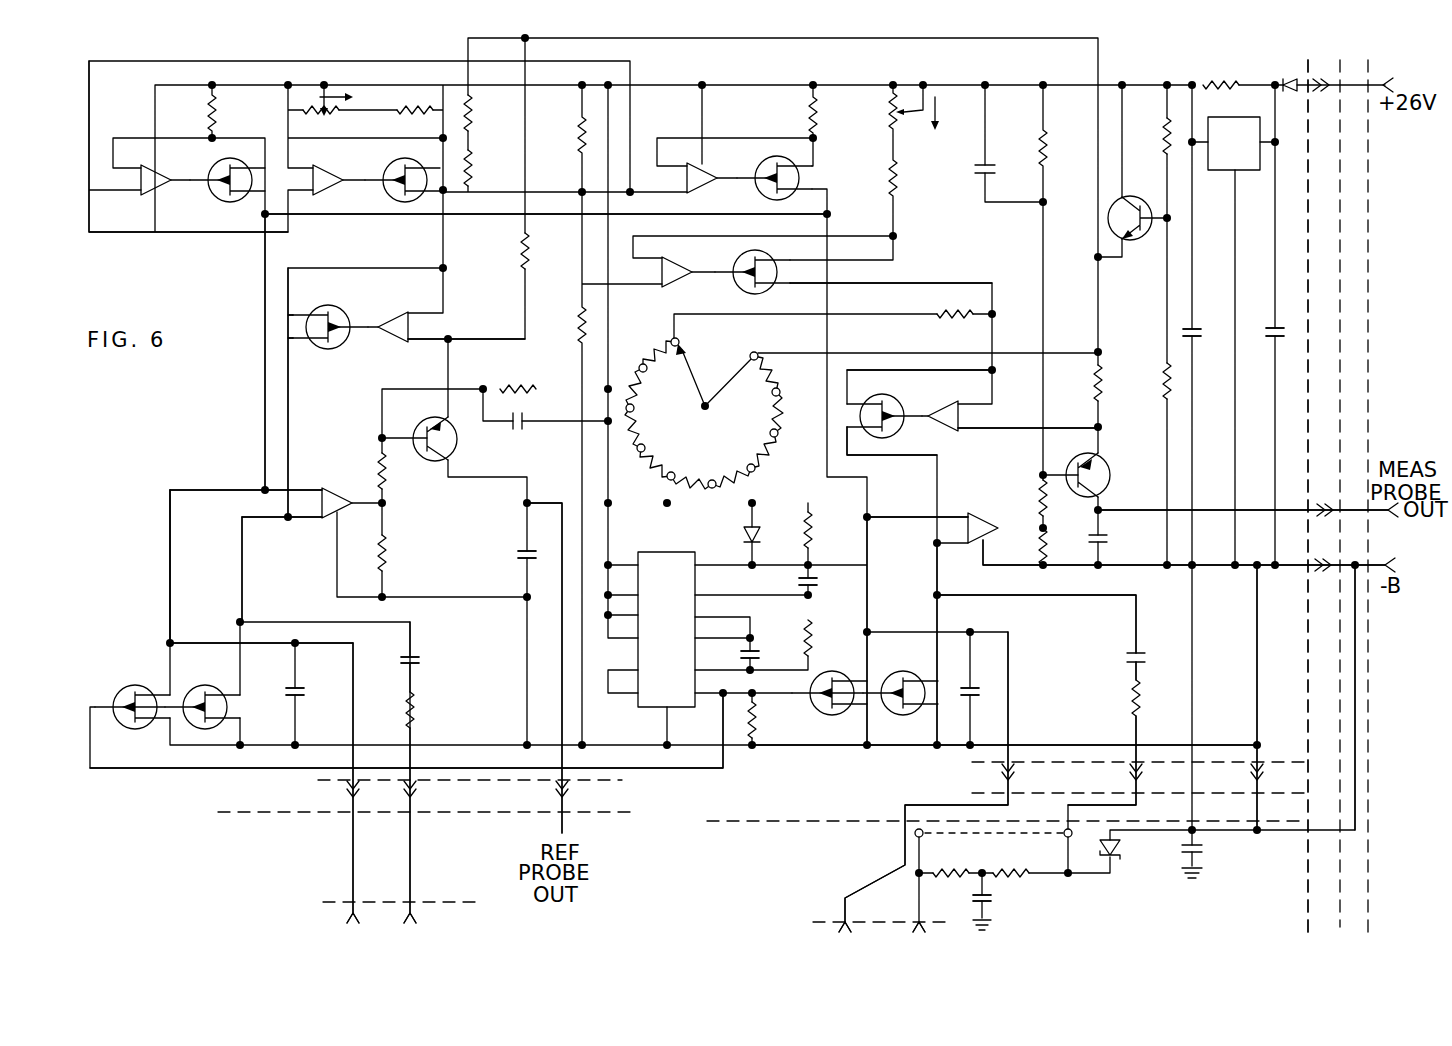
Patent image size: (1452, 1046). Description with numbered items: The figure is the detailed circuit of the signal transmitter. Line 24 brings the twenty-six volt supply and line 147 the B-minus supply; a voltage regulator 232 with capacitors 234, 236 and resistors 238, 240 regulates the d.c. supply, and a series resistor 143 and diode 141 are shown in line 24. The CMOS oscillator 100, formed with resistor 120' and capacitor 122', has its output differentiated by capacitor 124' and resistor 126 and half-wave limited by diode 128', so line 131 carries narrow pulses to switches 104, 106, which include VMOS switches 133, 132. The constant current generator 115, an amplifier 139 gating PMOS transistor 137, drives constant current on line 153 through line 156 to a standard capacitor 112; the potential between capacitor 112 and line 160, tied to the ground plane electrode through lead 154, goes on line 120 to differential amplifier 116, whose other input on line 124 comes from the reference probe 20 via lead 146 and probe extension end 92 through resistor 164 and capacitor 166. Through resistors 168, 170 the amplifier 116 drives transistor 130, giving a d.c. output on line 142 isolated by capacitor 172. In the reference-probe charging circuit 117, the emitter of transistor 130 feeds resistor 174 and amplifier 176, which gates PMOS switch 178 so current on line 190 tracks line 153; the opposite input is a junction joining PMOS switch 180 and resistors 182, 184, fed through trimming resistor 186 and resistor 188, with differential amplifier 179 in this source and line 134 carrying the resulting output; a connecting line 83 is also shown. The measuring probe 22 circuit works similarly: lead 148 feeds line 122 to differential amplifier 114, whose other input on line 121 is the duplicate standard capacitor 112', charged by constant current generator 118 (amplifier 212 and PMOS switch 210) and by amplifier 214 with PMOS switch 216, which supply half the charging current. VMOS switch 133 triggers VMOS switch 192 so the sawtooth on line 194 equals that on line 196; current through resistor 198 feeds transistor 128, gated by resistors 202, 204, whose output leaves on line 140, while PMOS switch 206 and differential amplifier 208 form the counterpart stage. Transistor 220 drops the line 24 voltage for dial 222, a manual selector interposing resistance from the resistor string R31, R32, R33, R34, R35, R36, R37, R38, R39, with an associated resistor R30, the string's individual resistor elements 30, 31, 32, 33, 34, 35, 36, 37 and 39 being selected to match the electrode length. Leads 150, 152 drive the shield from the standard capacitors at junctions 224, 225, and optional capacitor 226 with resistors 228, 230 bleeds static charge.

The amplifier 139 is at (150, 196).
The PMOS transistor 137 is at (206, 196).
The reference line 83 is at (843, 207).
The constant current generator 115 is at (213, 240).
The resistor 188 is at (400, 110).
The variable trimming resistor 186 is at (322, 114).
The PMOS transistor switch 180 is at (388, 158).
The differential amplifier 179 is at (325, 196).
The resistor 184 is at (472, 118).
The resistor 182 is at (472, 168).
The resistor 174 is at (533, 250).
The differential amplifier 214 is at (712, 170).
The PMOS transistor switch 216 is at (755, 192).
The line 196 is at (830, 286).
The resistor 238 is at (1163, 150).
The transistor 220 is at (1142, 246).
The resistor 143 is at (1218, 80).
The diode 141 is at (1288, 78).
The line 24 is at (1320, 88).
The voltage regulator 232 is at (1234, 143).
The PMOS transistor switch 178 is at (352, 300).
The differential amplifier 176 is at (395, 352).
The line 190 is at (289, 375).
The line 153 is at (265, 430).
The second current source circuit 117 is at (360, 380).
The line 134 is at (452, 365).
The transistor 130 is at (457, 445).
The input line 120 is at (327, 483).
The resistor 168 is at (387, 478).
The probe extension end 92 is at (288, 517).
The line 124 is at (282, 536).
The differential amplifier 116 is at (320, 522).
The resistor 170 is at (386, 553).
The capacitor 172 is at (518, 556).
The differential amplifier 212 is at (680, 288).
The PMOS transistor switch 210 is at (745, 292).
The dial 222 is at (718, 346).
The resistor R30 is at (963, 329).
The resistor string resistor R31 is at (651, 344).
The resistor string resistor R32 is at (658, 386).
The resistor string resistor R33 is at (656, 426).
The resistor string resistor R34 is at (670, 455).
The resistor string resistor R35 is at (697, 469).
The resistor string resistor R36 is at (751, 482).
The resistor string resistor R37 is at (784, 452).
The resistor string resistor R38 is at (758, 414).
The resistor string resistor R39 is at (756, 376).
The resistor R30 30 is at (942, 318).
The resistor R31 31 is at (651, 344).
The resistor R32 32 is at (658, 386).
The resistor R33 33 is at (656, 426).
The resistor R34 34 is at (670, 455).
The resistor R35 35 is at (697, 469).
The resistor R36 36 is at (751, 482).
The resistor R37 37 is at (784, 452).
The resistor R39 39 is at (756, 376).
The diode 128' is at (723, 528).
The resistor 126 is at (812, 540).
The capacitor 124' is at (832, 591).
The capacitor 122' is at (772, 635).
The resistor 120' is at (835, 634).
The oscillator 100 is at (666, 629).
The line 131 is at (718, 700).
The switch 104 is at (827, 710).
The line 160 is at (824, 752).
The resistor 198 is at (1103, 380).
The resistor 240 is at (1162, 392).
The VMOS switch 132 is at (1096, 426).
The transistor 128 is at (1109, 467).
The differential amplifier 208 is at (905, 394).
The PMOS transistor switch 206 is at (950, 401).
The constant current generator 118 is at (952, 442).
The line 121 is at (896, 516).
The differential amplifier 114 is at (988, 522).
The resistor 202 is at (1046, 506).
The resistor 204 is at (1053, 548).
The capacitor 234 is at (1208, 322).
The capacitor 236 is at (1272, 340).
The line 140 is at (1380, 512).
The junction 224 is at (168, 640).
The switch 106 is at (170, 677).
The line 156 is at (204, 642).
The standard capacitor 112 is at (314, 675).
The capacitor 166 is at (414, 666).
The resistor 164 is at (414, 708).
The output line 142 is at (586, 826).
The junction 225 is at (868, 630).
The VMOS switch 192 is at (905, 670).
The VMOS switch 133 is at (838, 670).
The standard capacitor 112' is at (1015, 675).
The line 194 is at (937, 578).
The line 122 is at (1165, 560).
The lead 148 is at (1138, 808).
The lead 154 is at (1257, 808).
The line 147 is at (1362, 572).
The lead 150 is at (352, 860).
The lead 146 is at (412, 862).
The lead 152 is at (904, 850).
The resistor 228 is at (946, 870).
The resistor 230 is at (1012, 870).
The capacitor 226 is at (985, 903).
The reference probe 20 is at (509, 935).
The measuring probe 22 is at (922, 932).